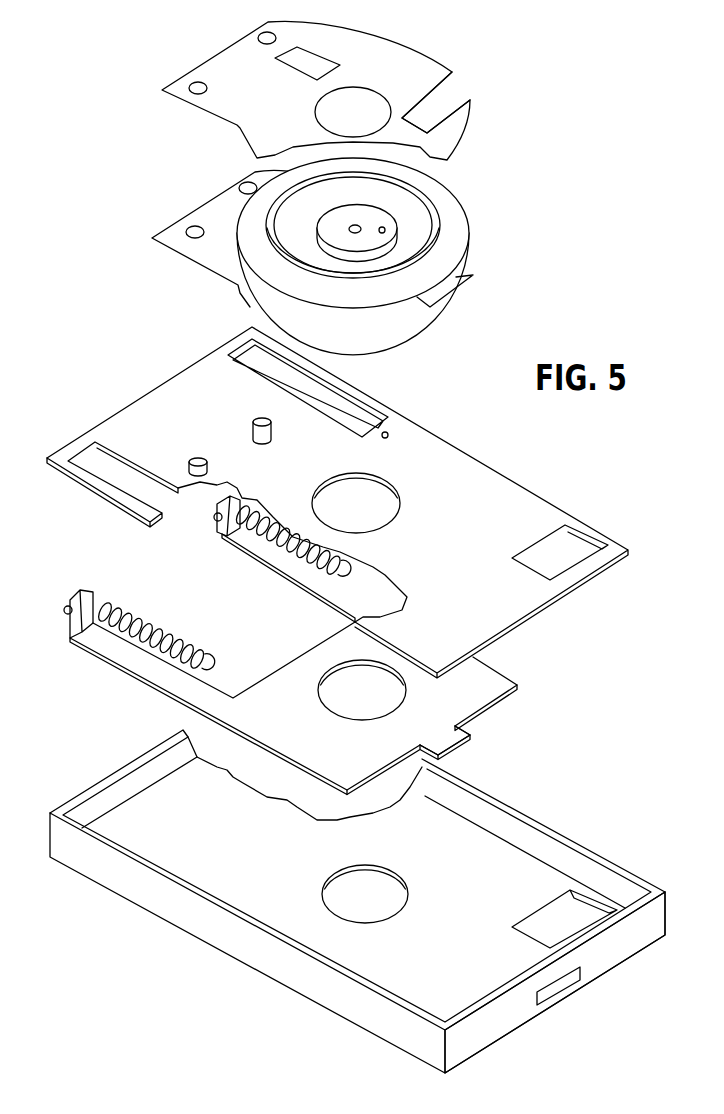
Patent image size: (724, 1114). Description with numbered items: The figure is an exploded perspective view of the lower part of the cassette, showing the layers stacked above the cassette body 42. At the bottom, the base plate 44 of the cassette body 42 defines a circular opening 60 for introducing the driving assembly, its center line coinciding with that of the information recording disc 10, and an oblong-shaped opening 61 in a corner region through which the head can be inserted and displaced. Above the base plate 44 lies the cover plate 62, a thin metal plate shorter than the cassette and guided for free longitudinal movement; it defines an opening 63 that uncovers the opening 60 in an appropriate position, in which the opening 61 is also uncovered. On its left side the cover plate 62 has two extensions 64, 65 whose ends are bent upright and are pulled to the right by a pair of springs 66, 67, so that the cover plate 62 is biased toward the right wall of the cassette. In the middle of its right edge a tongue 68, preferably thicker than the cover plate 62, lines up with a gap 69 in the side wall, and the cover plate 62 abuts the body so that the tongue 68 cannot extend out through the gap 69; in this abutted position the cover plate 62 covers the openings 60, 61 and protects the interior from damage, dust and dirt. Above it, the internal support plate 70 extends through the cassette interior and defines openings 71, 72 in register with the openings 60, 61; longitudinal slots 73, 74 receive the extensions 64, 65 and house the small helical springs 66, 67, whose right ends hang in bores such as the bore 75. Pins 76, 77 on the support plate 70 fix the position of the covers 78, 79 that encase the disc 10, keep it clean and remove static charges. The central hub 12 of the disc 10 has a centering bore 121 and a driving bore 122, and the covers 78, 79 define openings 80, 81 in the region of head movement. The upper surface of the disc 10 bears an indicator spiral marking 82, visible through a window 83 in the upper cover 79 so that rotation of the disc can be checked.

The information recording disc 10 is at (347, 255).
The central hub 12 is at (385, 264).
The centering bore 121 is at (354, 225).
The driving bore 122 is at (385, 230).
The cassette body 42 is at (357, 911).
The base plate 44 is at (463, 995).
The circular opening 60 is at (372, 910).
The oblong-shaped opening 61 is at (575, 917).
The cover plate 62 is at (303, 645).
The opening 63 is at (387, 703).
The extension 64 is at (128, 652).
The extension 65 is at (263, 552).
The spring 66 is at (173, 640).
The spring 67 is at (307, 560).
The tongue 68 is at (467, 740).
The gap 69 is at (557, 985).
The internal support plate 70 is at (337, 502).
The opening 71 is at (378, 498).
The opening 72 is at (572, 547).
The longitudinal slot 73 is at (108, 470).
The longitudinal slot 74 is at (330, 405).
The bore 75 is at (387, 433).
The pin 76 is at (196, 457).
The pin 77 is at (260, 418).
The cover 78 is at (192, 262).
The upper cover 79 is at (330, 84).
The opening 80 is at (457, 273).
The opening 81 is at (452, 97).
The indicator spiral marking 82 is at (275, 208).
The window 83 is at (313, 67).